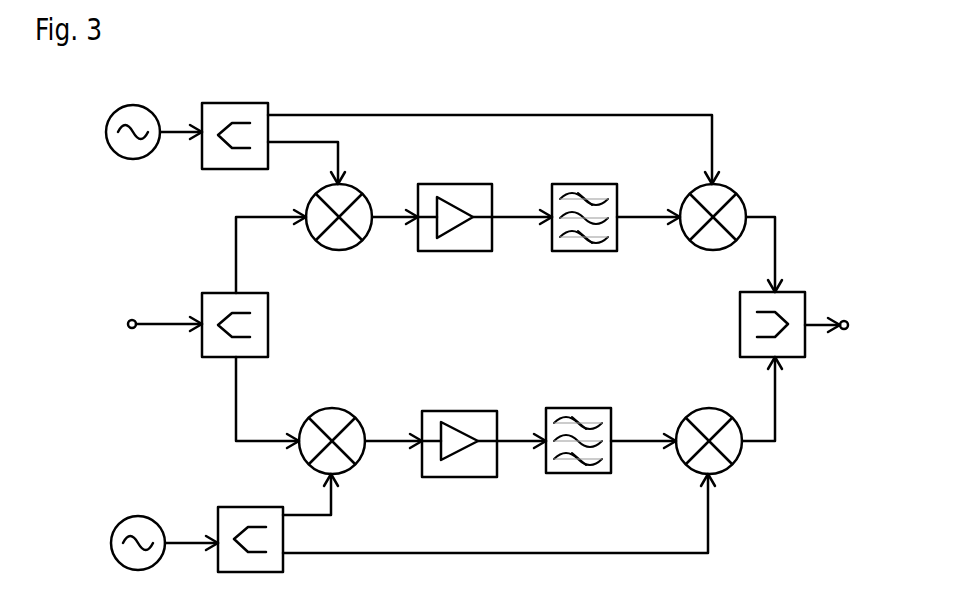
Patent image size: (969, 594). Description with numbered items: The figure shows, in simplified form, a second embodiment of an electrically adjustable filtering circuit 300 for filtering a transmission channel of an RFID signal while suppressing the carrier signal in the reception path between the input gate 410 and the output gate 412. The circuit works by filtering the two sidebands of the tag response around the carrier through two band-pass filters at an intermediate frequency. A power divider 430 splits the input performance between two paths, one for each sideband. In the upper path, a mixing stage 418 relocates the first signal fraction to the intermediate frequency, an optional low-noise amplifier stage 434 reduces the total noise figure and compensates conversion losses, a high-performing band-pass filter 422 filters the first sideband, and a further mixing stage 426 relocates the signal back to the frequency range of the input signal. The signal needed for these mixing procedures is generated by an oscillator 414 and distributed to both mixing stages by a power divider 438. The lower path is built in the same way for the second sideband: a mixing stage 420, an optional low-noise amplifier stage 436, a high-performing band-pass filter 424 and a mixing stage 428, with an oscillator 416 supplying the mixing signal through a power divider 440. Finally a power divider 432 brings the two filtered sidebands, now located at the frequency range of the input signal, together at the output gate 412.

The filtering circuit 300 is at (770, 150).
The input gate 410 is at (160, 308).
The output gate 412 is at (849, 316).
The oscillator 414 is at (154, 148).
The oscillator 416 is at (164, 530).
The mixing stage 418 is at (362, 234).
The mixing stage 420 is at (360, 426).
The band-pass filter 422 is at (616, 234).
The band-pass filter 424 is at (611, 425).
The mixing stage 426 is at (731, 238).
The mixing stage 428 is at (729, 415).
The power divider 430 is at (254, 329).
The power divider 432 is at (770, 324).
The low-noise amplifier stage 434 is at (485, 234).
The low-noise amplifier stage 436 is at (484, 427).
The power divider 438 is at (460, 147).
The power divider 440 is at (466, 523).